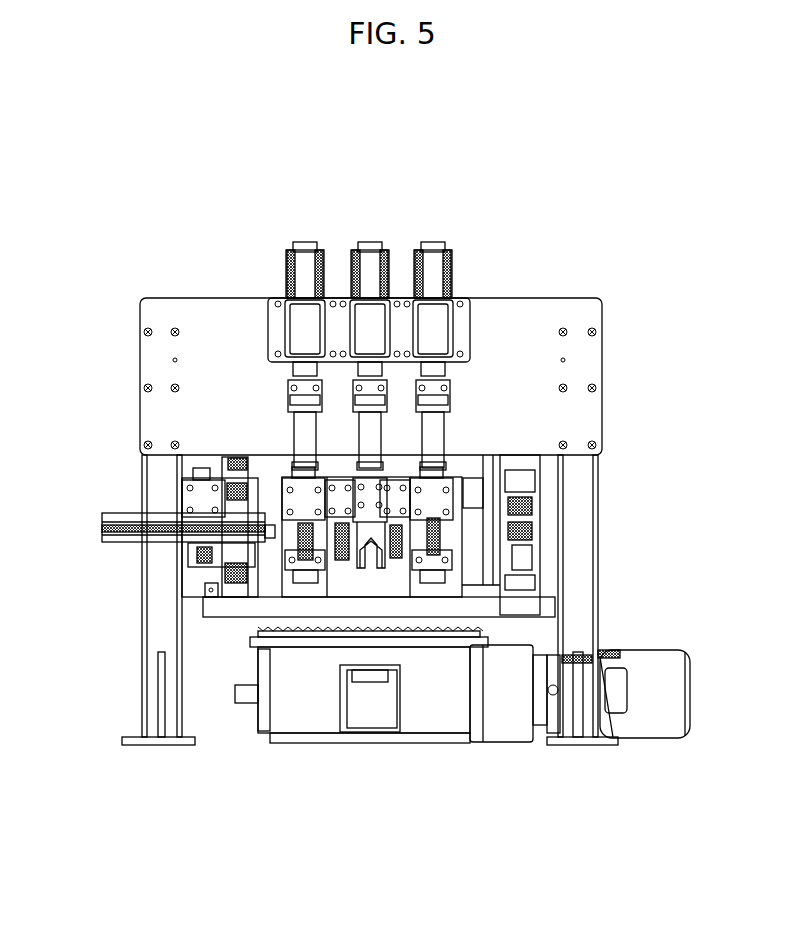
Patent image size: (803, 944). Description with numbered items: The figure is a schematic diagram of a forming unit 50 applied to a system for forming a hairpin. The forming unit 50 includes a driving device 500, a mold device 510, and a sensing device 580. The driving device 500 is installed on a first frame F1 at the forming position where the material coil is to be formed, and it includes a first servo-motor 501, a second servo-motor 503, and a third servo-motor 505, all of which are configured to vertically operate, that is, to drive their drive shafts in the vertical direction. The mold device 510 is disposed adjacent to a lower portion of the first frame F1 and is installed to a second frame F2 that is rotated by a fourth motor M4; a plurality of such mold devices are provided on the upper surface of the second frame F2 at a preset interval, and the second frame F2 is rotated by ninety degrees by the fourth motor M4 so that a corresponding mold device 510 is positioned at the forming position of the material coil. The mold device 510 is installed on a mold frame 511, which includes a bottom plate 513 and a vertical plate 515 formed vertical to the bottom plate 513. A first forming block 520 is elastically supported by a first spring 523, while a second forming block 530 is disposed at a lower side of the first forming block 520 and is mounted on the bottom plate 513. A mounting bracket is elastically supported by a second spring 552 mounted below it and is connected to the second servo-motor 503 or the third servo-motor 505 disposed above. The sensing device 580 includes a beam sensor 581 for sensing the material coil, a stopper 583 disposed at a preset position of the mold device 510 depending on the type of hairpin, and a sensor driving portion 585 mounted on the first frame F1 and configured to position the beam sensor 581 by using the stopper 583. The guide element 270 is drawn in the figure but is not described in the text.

The forming unit 50 is at (176, 204).
The driving device 500 is at (484, 262).
The first servo-motor 501 is at (370, 241).
The second servo-motor 503 is at (303, 241).
The third servo-motor 505 is at (433, 241).
The first frame F1 is at (601, 350).
The second frame F2 is at (527, 607).
The guide block 270 is at (300, 460).
The mold device 510 is at (525, 490).
The mold frame 511 is at (293, 798).
The bottom plate 513 is at (307, 598).
The vertical plate 515 is at (230, 470).
The first forming block 520 is at (432, 525).
The first spring 523 is at (345, 565).
The second forming block 530 is at (372, 525).
The second spring 552 is at (313, 470).
The sensing device 580 is at (108, 562).
The beam sensor 581 is at (267, 505).
The stopper 583 is at (240, 566).
The sensor driving portion 585 is at (102, 530).
The fourth motor M4 is at (663, 727).